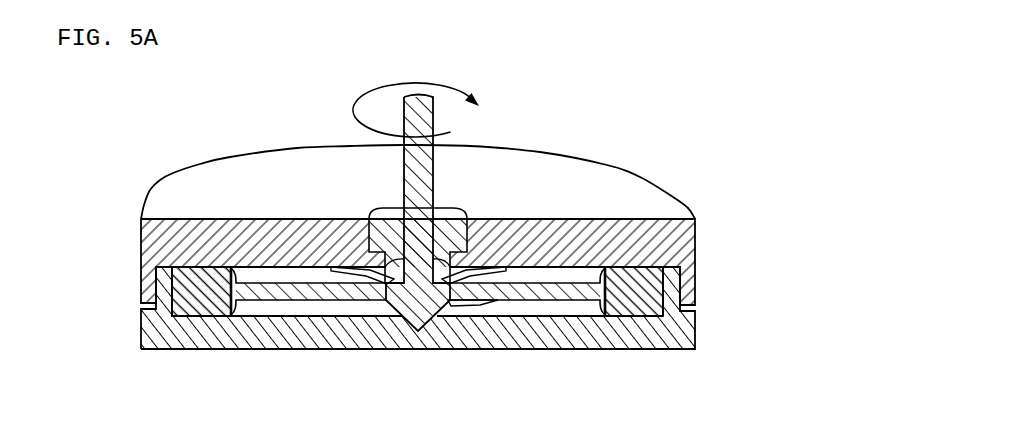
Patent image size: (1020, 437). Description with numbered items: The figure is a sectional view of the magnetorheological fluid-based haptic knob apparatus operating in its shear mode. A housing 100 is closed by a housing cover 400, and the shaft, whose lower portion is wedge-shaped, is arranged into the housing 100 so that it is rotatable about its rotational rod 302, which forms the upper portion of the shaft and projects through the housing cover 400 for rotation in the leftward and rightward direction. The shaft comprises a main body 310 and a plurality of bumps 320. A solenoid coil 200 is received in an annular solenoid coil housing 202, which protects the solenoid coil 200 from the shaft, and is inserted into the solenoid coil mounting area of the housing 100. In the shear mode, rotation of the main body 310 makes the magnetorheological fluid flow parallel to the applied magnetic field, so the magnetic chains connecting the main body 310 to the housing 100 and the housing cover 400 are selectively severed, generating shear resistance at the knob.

The housing 100 is at (677, 333).
The solenoid coil 200 is at (650, 287).
The annular solenoid coil housing 202 is at (642, 272).
The rotational rod 302 is at (433, 165).
The main body 310 is at (545, 295).
The bumps 320 is at (368, 272).
The housing cover 400 is at (630, 219).